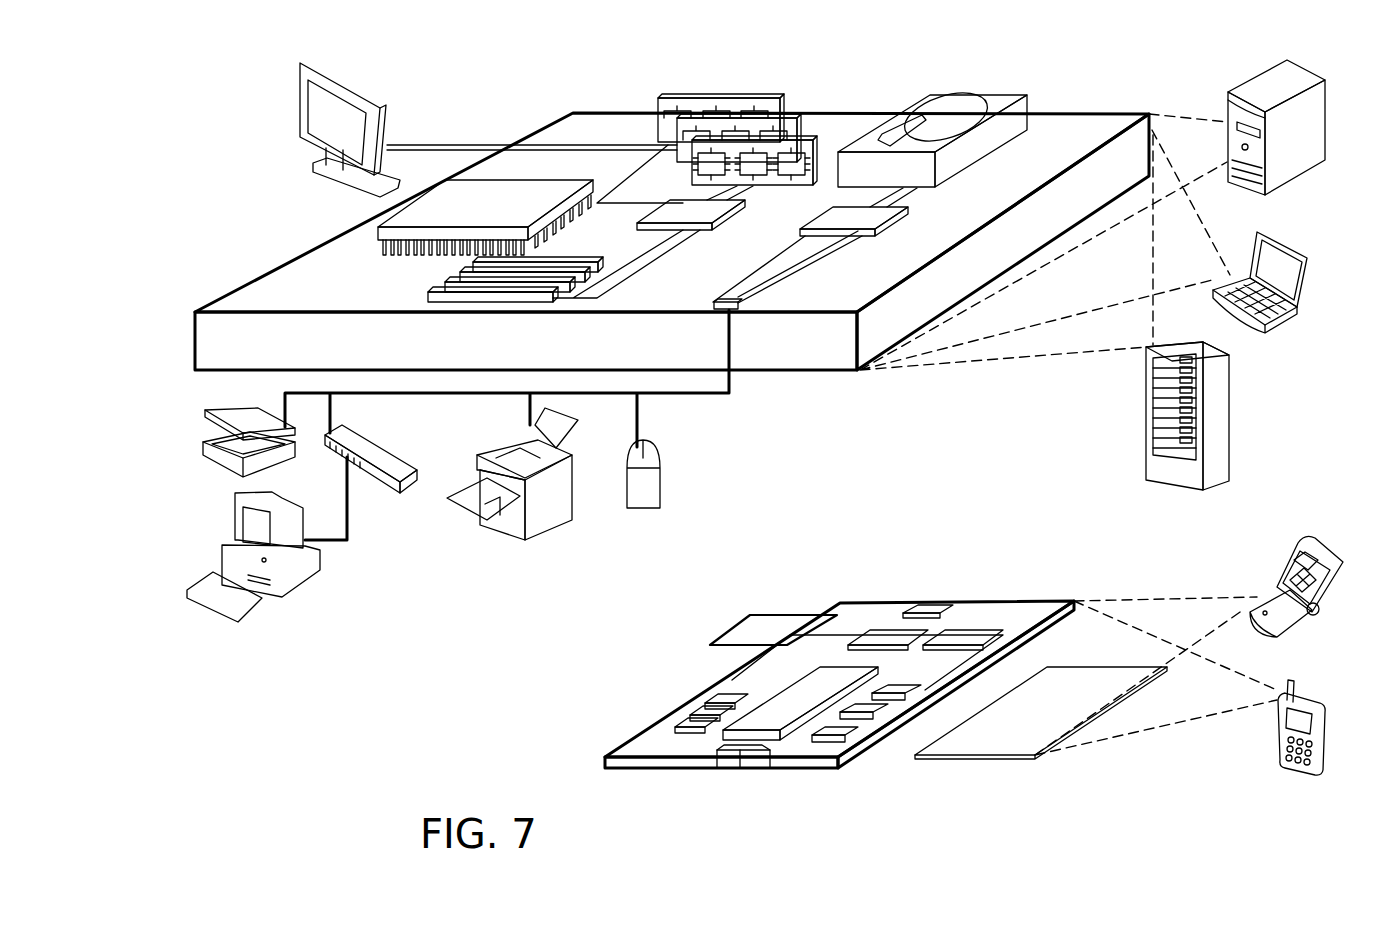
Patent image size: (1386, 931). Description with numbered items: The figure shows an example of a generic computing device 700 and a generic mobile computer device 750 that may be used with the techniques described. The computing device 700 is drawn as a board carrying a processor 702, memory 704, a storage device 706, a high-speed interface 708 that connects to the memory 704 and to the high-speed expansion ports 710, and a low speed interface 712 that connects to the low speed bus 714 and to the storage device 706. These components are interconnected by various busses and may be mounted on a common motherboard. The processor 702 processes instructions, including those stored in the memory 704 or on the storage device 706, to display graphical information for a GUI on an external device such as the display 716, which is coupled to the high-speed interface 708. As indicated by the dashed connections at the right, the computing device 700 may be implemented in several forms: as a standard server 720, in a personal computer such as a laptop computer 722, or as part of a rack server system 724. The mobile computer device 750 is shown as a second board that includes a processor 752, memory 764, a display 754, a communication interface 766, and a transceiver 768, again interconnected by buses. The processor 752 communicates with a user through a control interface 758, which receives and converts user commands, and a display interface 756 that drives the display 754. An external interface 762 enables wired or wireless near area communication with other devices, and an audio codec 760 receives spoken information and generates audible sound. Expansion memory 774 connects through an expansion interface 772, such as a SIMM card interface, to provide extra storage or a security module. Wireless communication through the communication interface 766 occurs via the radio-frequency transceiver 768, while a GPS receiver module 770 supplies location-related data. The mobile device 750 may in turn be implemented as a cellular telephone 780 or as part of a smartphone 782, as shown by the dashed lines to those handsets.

The computing device 700 is at (497, 84).
The processor 702 is at (378, 231).
The memory 704 is at (693, 104).
The storage device 706 is at (922, 93).
The high-speed interface 708 is at (672, 213).
The high-speed expansion ports 710 is at (437, 278).
The low speed interface 712 is at (855, 218).
The low speed bus 714 is at (735, 313).
The display 716 is at (299, 67).
The standard server 720 is at (1228, 96).
The laptop computer 722 is at (1290, 248).
The rack server system 724 is at (1144, 440).
The mobile computer device 750 is at (786, 566).
The processor 752 is at (777, 742).
The display 754 is at (1040, 758).
The display interface 756 is at (855, 742).
The control interface 758 is at (893, 718).
The audio codec 760 is at (898, 698).
The external interface 762 is at (738, 765).
The memory 764 is at (681, 722).
The communication interface 766 is at (885, 636).
The transceiver 768 is at (967, 637).
The GPS receiver module 770 is at (922, 605).
The expansion interface 772 is at (810, 612).
The expansion memory 774 is at (742, 612).
The cellular telephone 780 is at (1295, 541).
The smartphone 782 is at (1284, 678).